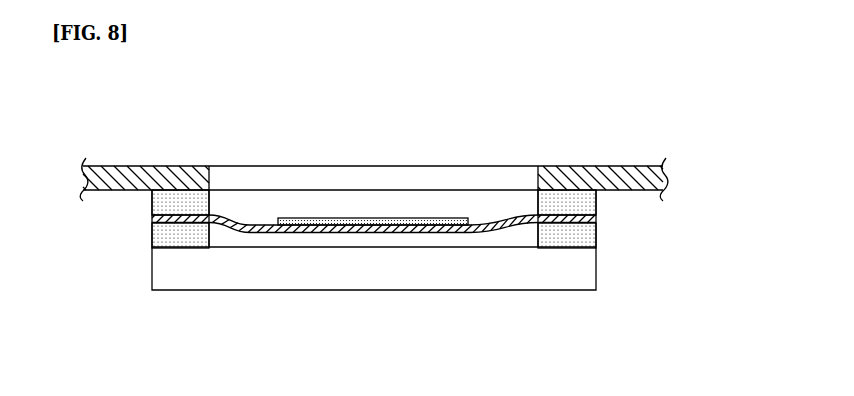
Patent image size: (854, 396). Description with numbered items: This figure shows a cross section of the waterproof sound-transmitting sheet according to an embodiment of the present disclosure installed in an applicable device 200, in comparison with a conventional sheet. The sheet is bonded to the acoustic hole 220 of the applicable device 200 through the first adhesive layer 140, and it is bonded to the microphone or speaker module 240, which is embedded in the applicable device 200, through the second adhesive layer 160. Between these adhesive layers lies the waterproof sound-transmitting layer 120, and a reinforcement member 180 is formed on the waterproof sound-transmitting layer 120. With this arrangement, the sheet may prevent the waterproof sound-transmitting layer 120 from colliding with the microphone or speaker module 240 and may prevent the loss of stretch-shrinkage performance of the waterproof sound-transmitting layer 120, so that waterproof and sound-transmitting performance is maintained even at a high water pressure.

The applicable device 200 is at (588, 166).
The acoustic hole 220 is at (318, 166).
The first adhesive layer 140 is at (593, 200).
The second adhesive layer 160 is at (593, 233).
The waterproof sound-transmitting layer 120 is at (148, 218).
The reinforcement member 180 is at (398, 217).
The microphone or speaker module 240 is at (373, 290).